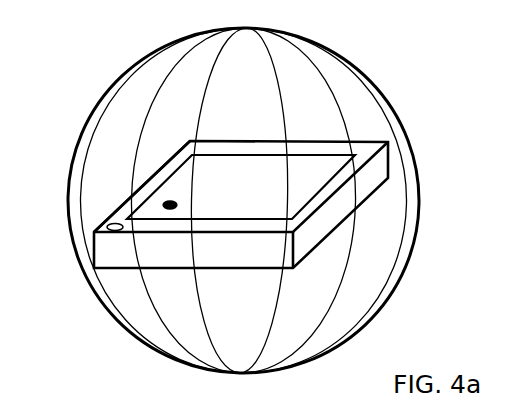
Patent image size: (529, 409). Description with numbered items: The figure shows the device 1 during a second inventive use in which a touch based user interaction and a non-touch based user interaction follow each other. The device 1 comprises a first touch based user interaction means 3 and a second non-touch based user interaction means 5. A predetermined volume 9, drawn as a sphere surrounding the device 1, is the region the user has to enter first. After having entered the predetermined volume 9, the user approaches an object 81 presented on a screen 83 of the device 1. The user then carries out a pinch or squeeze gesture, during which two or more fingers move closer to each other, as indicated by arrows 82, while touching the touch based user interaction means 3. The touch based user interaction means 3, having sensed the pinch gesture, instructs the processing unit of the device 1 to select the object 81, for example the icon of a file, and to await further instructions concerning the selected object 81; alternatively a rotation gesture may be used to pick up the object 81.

The device 1 is at (205, 178).
The touch based user interaction means 3 is at (205, 165).
The non-touch based user interaction means 5 is at (156, 210).
The predetermined volume 9 is at (105, 320).
The object 81 is at (168, 201).
The arrows 82 is at (185, 196).
The screen 83 is at (244, 154).